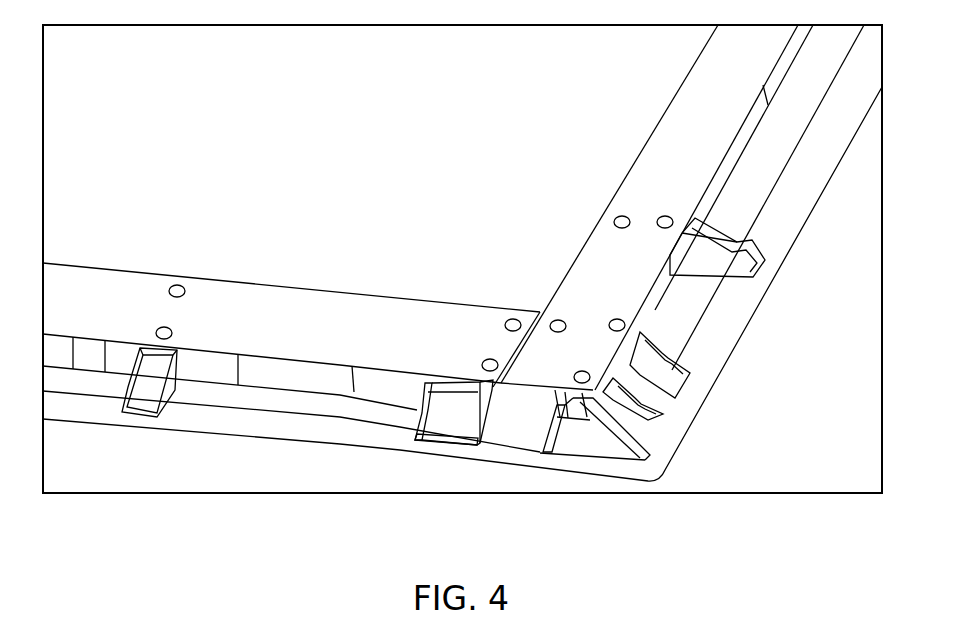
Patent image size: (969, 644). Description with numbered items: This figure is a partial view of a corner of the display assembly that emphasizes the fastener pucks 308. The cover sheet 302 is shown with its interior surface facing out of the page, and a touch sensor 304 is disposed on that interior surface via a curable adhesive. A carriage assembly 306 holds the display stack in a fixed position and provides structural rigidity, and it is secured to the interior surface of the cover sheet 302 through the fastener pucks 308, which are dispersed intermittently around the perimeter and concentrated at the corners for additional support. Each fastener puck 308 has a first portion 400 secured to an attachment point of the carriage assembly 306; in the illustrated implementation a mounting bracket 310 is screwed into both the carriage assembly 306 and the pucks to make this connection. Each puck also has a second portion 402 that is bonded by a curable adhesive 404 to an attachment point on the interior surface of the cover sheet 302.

The cover sheet 302 is at (287, 446).
The touch sensor 304 is at (357, 421).
The carriage assembly 306 is at (416, 218).
The fastener puck 308 is at (423, 403).
The mounting bracket 310 is at (278, 287).
The first portion 400 is at (419, 402).
The second portion 402 is at (455, 432).
The curable adhesive 404 is at (440, 444).